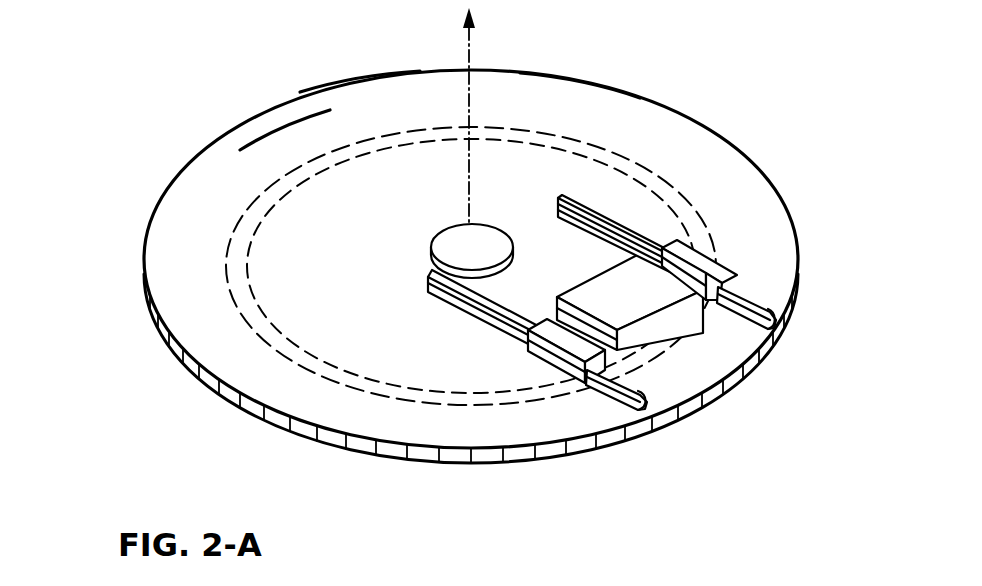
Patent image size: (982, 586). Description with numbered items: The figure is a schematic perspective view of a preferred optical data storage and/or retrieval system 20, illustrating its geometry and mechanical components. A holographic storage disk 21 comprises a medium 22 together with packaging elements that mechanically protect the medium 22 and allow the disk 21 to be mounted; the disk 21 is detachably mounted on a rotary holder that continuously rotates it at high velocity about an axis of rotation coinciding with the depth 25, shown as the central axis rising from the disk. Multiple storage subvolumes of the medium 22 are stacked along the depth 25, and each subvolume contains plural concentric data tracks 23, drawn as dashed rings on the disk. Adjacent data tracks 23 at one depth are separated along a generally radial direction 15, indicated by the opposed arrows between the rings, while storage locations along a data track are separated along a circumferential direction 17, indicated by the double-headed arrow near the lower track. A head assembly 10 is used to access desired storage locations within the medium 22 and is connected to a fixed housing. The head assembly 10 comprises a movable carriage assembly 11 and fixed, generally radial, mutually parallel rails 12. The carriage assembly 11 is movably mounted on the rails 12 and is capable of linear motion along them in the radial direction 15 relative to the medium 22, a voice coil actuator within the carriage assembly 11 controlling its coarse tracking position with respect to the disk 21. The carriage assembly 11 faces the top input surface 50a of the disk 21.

The head assembly 10 is at (644, 249).
The carriage assembly 11 is at (720, 248).
The rails 12 is at (748, 292).
The radial direction 15 is at (188, 268).
The circumferential direction 17 is at (504, 379).
The optical data storage and/or retrieval system 20 is at (118, 152).
The holographic storage disk 21 is at (356, 72).
The medium 22 is at (333, 124).
The data tracks 23 is at (648, 168).
The depth 25 is at (471, 99).
The top input surface 50a is at (588, 104).